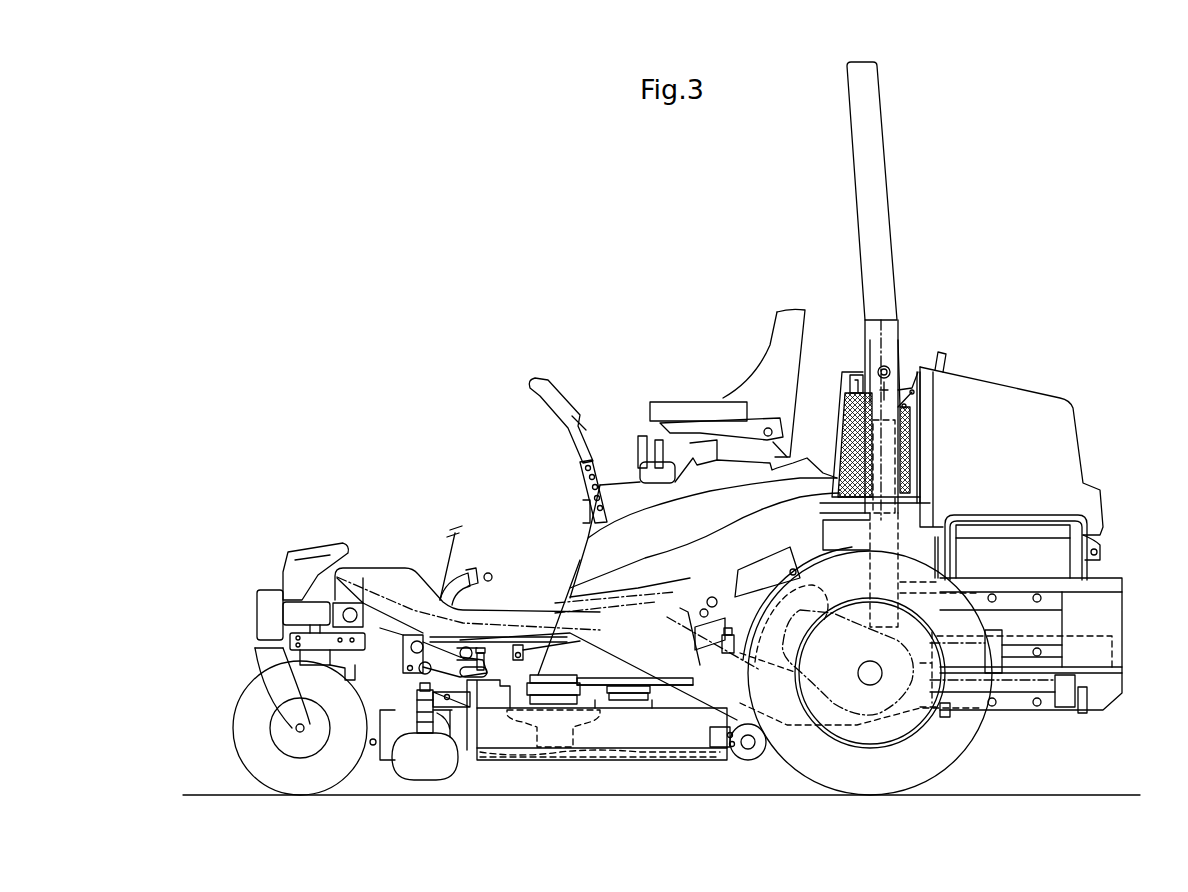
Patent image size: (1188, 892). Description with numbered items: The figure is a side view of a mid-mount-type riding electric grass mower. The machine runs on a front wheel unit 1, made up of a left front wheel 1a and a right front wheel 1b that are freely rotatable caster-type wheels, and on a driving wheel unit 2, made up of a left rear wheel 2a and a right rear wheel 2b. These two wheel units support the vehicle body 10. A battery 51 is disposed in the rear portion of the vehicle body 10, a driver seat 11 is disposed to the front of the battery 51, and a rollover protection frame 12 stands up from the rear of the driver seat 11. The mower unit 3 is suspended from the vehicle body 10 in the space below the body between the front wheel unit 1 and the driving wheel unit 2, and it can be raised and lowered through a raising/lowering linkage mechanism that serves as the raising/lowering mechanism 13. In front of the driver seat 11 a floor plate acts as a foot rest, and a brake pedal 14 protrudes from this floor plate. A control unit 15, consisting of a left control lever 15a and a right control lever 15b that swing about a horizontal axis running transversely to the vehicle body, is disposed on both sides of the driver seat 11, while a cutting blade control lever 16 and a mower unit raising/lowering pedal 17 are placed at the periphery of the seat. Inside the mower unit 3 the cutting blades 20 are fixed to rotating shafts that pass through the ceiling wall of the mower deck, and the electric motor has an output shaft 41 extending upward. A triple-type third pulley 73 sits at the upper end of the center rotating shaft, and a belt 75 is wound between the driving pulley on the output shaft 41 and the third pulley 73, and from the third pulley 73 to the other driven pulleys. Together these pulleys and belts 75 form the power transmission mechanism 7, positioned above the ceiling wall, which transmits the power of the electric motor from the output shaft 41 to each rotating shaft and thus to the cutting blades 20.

The left front wheel 1a is at (250, 692).
The right front wheel 1b is at (250, 692).
The front wheel unit 1 is at (240, 733).
The left rear wheel 2a is at (915, 654).
The right rear wheel 2b is at (915, 654).
The driving wheel unit 2 is at (967, 727).
The mower unit 3 is at (645, 763).
The power transmission mechanism 7 is at (563, 668).
The vehicle body 10 is at (388, 567).
The driver seat 11 is at (766, 362).
The rollover protection frame 12 is at (863, 165).
The raising/lowering mechanism 13 is at (400, 675).
The brake pedal 14 is at (458, 532).
The left control lever 15a is at (512, 450).
The right control lever 15b is at (512, 450).
The control unit 15 is at (545, 400).
The cutting blade control lever 16 is at (641, 434).
The mower unit raising/lowering pedal 17 is at (658, 438).
The cutting blade 20 is at (527, 760).
The output shaft 41 is at (630, 675).
The battery 51 is at (1100, 637).
The third pulley 73 is at (541, 670).
The belt 75 is at (588, 683).